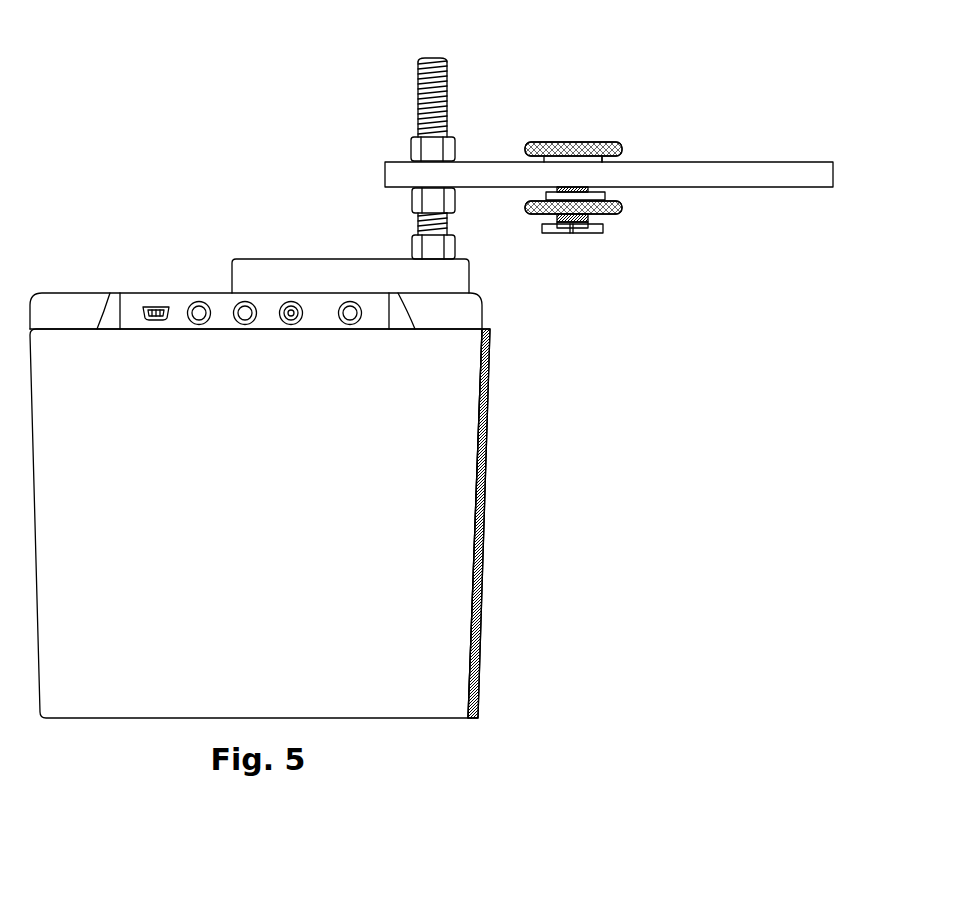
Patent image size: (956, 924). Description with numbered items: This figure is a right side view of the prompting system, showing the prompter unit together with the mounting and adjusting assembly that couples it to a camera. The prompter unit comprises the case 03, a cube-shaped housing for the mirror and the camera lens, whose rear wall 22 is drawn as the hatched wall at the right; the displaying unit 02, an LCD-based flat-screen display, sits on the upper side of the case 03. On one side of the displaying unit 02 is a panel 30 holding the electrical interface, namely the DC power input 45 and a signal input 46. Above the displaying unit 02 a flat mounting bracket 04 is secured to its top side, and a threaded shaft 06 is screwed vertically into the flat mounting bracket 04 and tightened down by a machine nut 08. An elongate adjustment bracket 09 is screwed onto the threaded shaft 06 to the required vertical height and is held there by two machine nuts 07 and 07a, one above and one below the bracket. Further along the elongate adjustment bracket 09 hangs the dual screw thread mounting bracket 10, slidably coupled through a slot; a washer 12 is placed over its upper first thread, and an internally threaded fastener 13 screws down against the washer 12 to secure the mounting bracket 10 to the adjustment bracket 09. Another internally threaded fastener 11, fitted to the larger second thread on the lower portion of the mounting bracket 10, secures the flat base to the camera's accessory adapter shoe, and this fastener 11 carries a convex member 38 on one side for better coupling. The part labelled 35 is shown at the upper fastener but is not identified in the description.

The displaying unit 02 is at (79, 290).
The case 03 is at (118, 690).
The flat mounting bracket 04 is at (330, 270).
The threaded shaft 06 is at (443, 62).
The machine nut 07 is at (445, 150).
The machine nut 07a is at (420, 200).
The machine nut 08 is at (448, 248).
The elongate adjustment bracket 09 is at (652, 172).
The dual screw thread mounting bracket 10 is at (588, 230).
The internally threaded fastener 11 is at (620, 210).
The washer 12 is at (598, 192).
The internally threaded fastener 13 is at (597, 150).
The rear wall 22 is at (493, 338).
The panel 30 is at (172, 300).
The knob stem 35 is at (600, 160).
The convex member 38 is at (548, 197).
The DC power input 45 is at (291, 325).
The signal input 46 is at (155, 318).